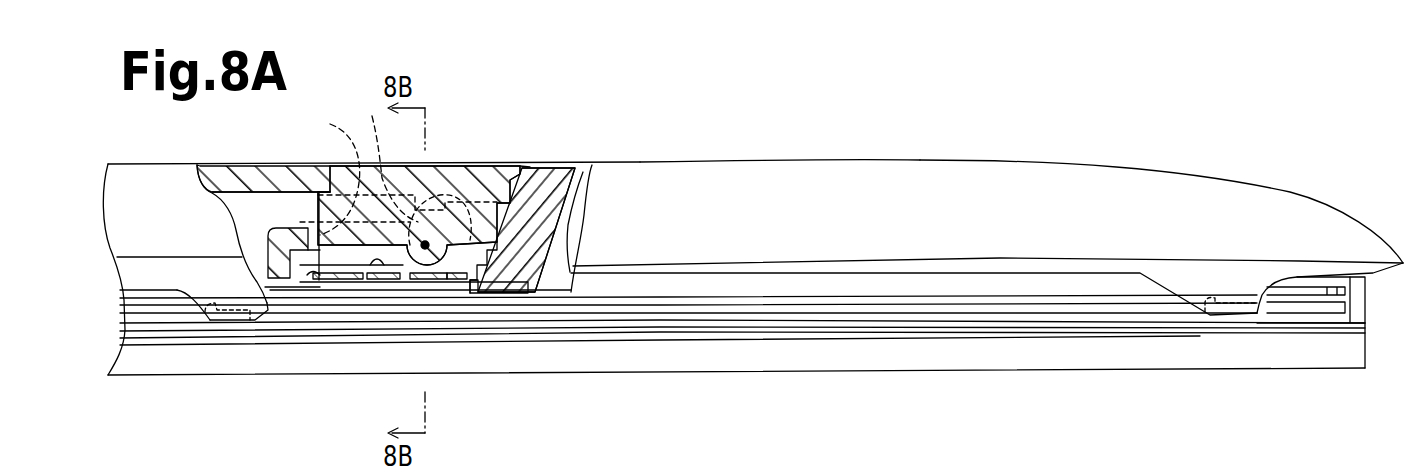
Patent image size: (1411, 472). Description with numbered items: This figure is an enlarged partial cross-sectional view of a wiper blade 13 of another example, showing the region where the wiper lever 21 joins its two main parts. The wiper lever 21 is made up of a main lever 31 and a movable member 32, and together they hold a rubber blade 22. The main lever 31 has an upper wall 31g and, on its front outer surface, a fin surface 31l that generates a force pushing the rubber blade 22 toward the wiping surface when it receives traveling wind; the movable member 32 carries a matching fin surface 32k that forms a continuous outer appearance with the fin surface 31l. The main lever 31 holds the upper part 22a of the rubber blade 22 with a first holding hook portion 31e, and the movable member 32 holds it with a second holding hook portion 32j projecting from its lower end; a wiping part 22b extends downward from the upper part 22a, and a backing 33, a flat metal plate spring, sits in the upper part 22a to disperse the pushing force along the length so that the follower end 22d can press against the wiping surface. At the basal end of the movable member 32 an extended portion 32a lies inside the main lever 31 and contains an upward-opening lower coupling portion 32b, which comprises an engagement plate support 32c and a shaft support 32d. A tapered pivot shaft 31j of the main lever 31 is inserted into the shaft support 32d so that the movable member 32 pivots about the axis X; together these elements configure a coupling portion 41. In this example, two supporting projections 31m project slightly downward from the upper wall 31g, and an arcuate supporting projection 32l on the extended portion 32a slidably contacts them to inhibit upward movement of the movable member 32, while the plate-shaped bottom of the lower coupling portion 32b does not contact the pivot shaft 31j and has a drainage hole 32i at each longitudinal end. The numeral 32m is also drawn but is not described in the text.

The wiper blade 13 is at (704, 118).
The wiper lever 21 is at (629, 151).
The rubber blade 22 is at (708, 372).
The upper part 22a is at (1000, 282).
The wiping part 22b is at (1058, 372).
The follower end 22d is at (1263, 370).
The main lever 31 is at (127, 180).
The first holding hook portion 31e is at (197, 322).
The upper wall 31g is at (470, 173).
The pivot shaft 31j is at (487, 170).
The fin surface 31l is at (180, 178).
The supporting projection 31m is at (404, 178).
The movable member 32 is at (947, 180).
The extended portion 32a is at (280, 213).
The lower coupling portion 32b is at (322, 184).
The engagement plate support 32c is at (348, 168).
The shaft support 32d is at (404, 166).
The drainage hole 32i is at (307, 282).
The second holding hook portion 32j is at (1203, 315).
The fin surface 32k is at (845, 180).
The arcuate supporting projection 32l is at (449, 178).
The cover bump 32m is at (367, 282).
The backing 33 is at (1085, 282).
The coupling portion 41 is at (511, 242).
The axis X is at (425, 268).